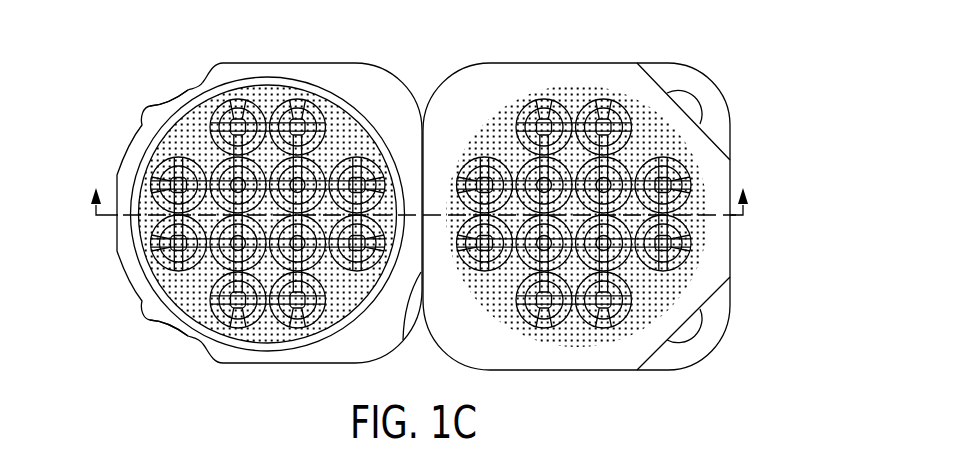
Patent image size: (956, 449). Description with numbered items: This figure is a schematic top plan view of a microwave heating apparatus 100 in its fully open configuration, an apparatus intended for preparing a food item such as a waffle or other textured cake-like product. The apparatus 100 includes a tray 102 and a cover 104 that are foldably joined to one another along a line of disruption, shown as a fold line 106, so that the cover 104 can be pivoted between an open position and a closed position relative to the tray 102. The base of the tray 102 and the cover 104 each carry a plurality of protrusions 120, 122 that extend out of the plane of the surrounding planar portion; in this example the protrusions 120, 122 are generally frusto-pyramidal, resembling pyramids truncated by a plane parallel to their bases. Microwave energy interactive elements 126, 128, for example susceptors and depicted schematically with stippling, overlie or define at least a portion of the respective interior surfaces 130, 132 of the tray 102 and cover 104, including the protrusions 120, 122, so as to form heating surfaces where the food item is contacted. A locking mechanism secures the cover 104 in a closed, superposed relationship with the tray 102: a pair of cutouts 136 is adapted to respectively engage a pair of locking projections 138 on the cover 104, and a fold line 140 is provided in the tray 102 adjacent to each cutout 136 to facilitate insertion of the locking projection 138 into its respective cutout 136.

The microwave heating apparatus 100 is at (786, 68).
The tray 102 is at (104, 147).
The cover 104 is at (762, 152).
The fold line 106 is at (403, 340).
The protrusions 120 is at (298, 121).
The protrusions 122 is at (662, 250).
The microwave energy interactive element 126 is at (345, 135).
The microwave energy interactive element 128 is at (572, 216).
The interior surface 130 is at (361, 296).
The interior surface 132 is at (513, 296).
The cutouts 136 is at (693, 105).
The locking projections 138 is at (160, 104).
The fold line 140 is at (641, 66).